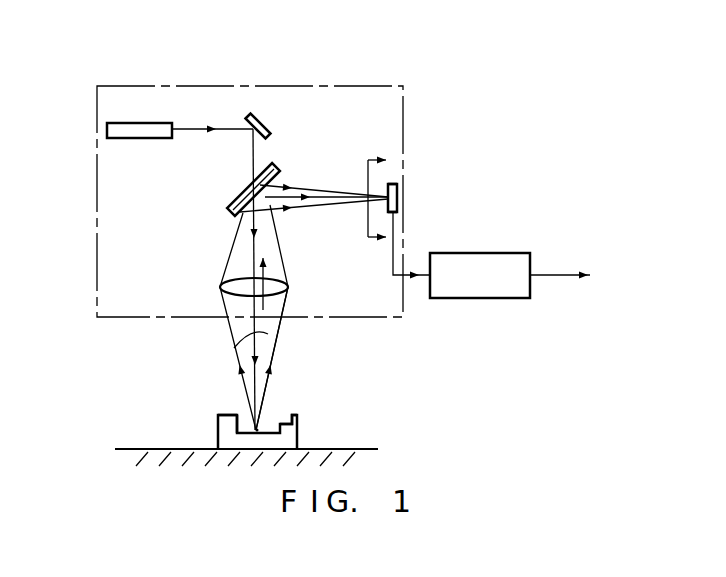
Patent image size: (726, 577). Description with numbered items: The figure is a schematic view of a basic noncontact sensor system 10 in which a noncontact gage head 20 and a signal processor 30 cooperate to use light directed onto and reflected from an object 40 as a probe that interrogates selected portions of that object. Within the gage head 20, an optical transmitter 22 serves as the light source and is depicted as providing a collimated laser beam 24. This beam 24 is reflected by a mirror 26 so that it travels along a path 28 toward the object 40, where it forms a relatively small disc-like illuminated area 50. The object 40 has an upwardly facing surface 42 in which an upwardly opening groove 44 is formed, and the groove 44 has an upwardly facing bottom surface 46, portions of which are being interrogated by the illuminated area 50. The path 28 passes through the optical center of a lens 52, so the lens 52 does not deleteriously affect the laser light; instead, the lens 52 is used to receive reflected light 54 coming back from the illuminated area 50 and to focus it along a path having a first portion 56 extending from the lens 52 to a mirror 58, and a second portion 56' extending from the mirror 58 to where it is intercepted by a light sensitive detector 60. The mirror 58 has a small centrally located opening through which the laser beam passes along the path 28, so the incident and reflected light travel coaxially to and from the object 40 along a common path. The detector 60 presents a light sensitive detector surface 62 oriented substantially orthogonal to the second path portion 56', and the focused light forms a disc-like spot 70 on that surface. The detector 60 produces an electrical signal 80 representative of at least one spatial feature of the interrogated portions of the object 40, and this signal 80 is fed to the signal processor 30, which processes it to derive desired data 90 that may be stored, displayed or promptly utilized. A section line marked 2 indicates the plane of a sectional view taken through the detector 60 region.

The noncontact sensor system 10 is at (485, 91).
The noncontact gage head 20 is at (360, 83).
The optical transmitter 22 is at (142, 123).
The collimated laser beam 24 is at (193, 129).
The mirror 26 is at (268, 138).
The path 28 is at (253, 167).
The signal processor 30 is at (498, 253).
The object 40 is at (217, 427).
The upwardly facing surface 42 is at (220, 413).
The groove 44 is at (238, 412).
The bottom surface 46 is at (294, 417).
The illuminated area 50 is at (264, 422).
The lens 52 is at (223, 279).
The reflected light 54 is at (270, 334).
The first path portion 56 is at (293, 286).
The second path portion 56' is at (314, 212).
The mirror 58 is at (250, 193).
The light sensitive detector 60 is at (398, 193).
The light sensitive detector surface 62 is at (386, 212).
The illuminated spot 70 is at (382, 180).
The electrical signal 80 is at (393, 272).
The desired data 90 is at (545, 276).
The section line 2- 2 is at (377, 201).